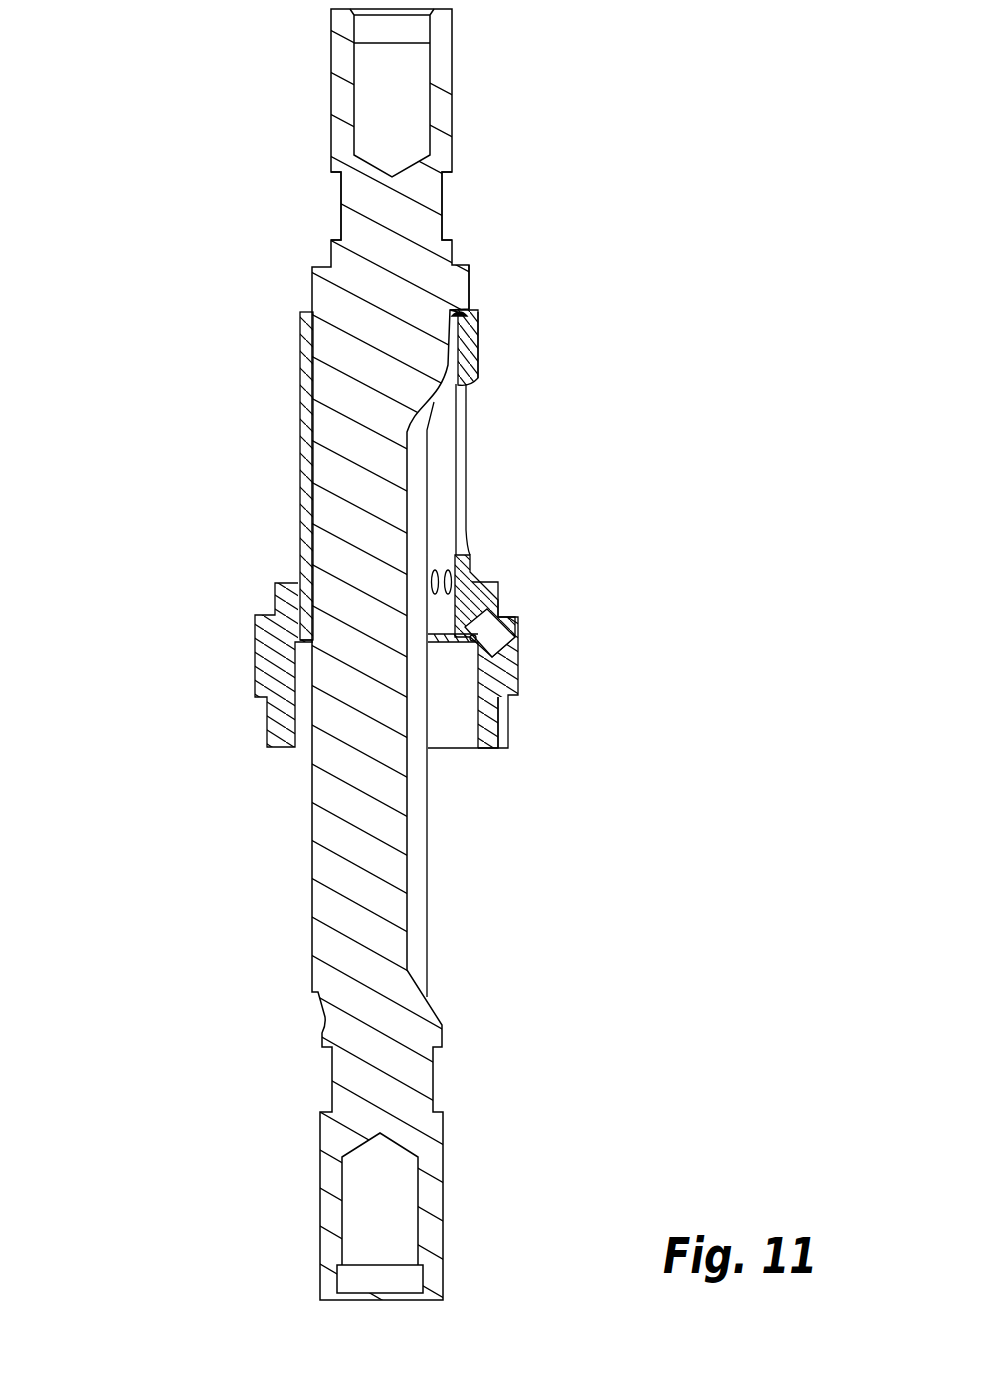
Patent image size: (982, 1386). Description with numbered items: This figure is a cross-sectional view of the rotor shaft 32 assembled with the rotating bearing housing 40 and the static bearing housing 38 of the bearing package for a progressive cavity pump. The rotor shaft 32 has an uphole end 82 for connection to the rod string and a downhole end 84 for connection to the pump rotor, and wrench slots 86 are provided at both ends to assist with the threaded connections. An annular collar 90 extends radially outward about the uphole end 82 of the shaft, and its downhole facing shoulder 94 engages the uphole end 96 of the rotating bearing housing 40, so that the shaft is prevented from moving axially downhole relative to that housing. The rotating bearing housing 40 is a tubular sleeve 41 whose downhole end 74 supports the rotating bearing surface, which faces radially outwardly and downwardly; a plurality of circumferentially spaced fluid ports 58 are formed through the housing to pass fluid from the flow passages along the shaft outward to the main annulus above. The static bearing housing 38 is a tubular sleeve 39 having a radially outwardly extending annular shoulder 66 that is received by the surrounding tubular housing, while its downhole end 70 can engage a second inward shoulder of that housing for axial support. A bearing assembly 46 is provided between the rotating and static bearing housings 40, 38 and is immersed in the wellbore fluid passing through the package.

The rotor shaft 32 is at (332, 862).
The static bearing housing 38 is at (157, 720).
The tubular sleeve 39 is at (255, 640).
The rotating bearing housing 40 is at (187, 398).
The tubular sleeve 41 is at (300, 444).
The bearing assembly 46 is at (632, 746).
The fluid ports 58 is at (466, 392).
The annular shoulder 66 is at (508, 700).
The downhole end 70 is at (485, 750).
The downhole end 74 is at (497, 586).
The uphole end 82 is at (440, 82).
The downhole end 84 is at (330, 1247).
The wrench slots 86 is at (341, 190).
The annular collar 90 is at (458, 282).
The downhole facing shoulder 94 is at (462, 306).
The uphole end 96 is at (472, 311).